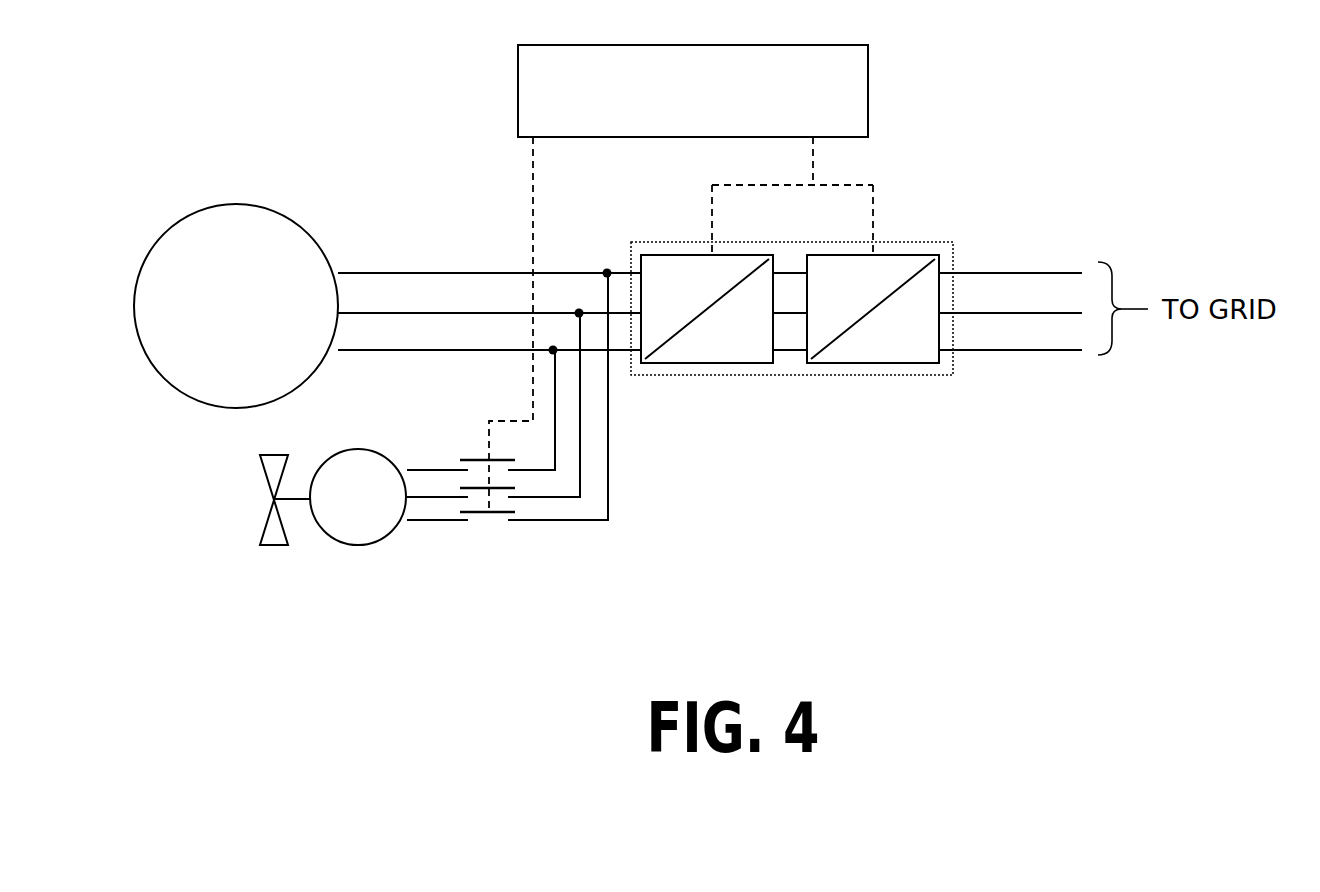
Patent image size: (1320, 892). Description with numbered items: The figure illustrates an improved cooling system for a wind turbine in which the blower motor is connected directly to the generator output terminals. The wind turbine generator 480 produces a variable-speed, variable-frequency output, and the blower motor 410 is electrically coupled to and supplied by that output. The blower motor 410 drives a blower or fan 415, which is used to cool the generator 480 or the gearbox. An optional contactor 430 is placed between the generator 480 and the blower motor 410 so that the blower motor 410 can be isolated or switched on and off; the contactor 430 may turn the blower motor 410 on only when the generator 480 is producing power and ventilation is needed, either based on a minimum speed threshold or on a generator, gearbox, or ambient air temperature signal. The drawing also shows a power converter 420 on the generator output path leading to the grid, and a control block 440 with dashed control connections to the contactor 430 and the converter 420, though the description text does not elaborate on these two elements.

The blower motor 410 is at (331, 512).
The blower or fan 415 is at (275, 548).
The power converter 420 is at (918, 240).
The contactor 430 is at (490, 535).
The controller 440 is at (666, 109).
The wind turbine generator 480 is at (209, 321).